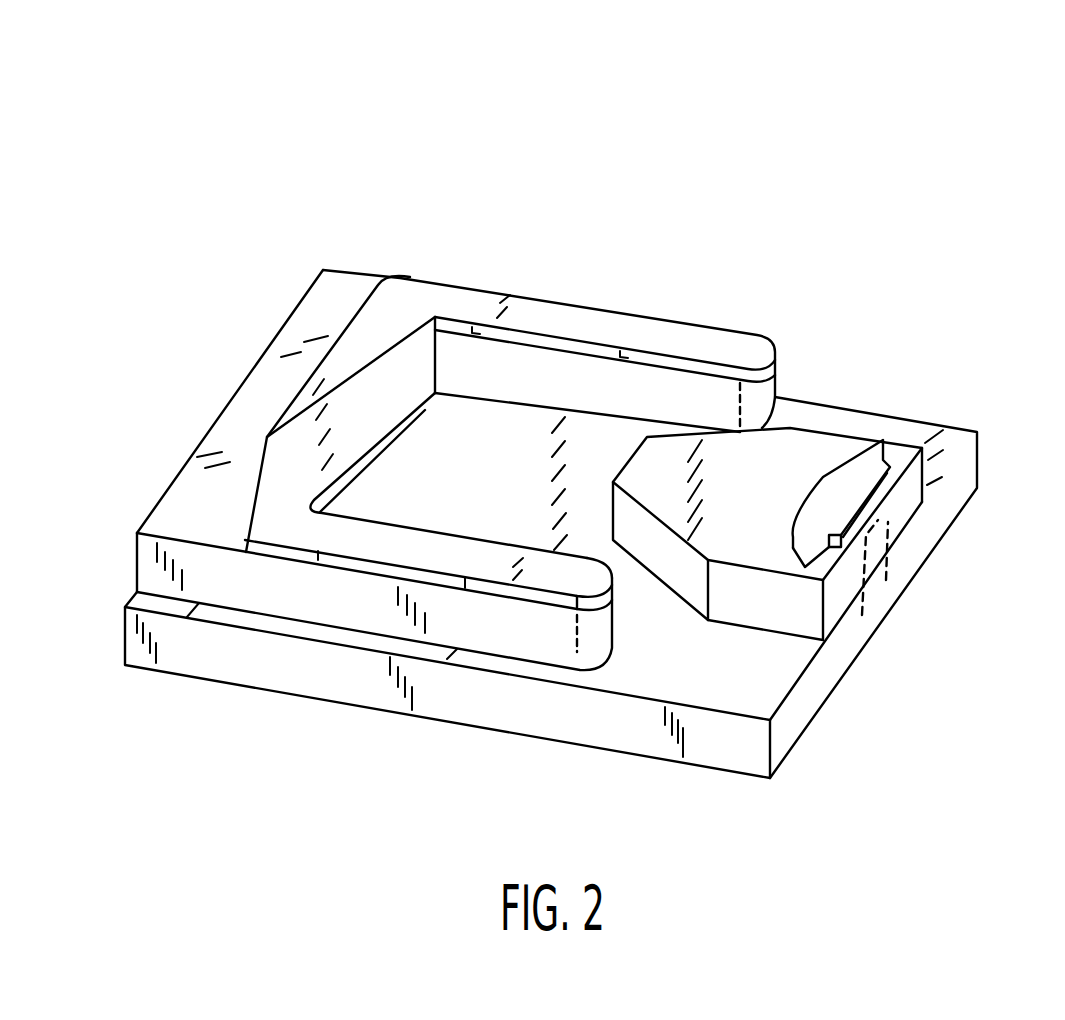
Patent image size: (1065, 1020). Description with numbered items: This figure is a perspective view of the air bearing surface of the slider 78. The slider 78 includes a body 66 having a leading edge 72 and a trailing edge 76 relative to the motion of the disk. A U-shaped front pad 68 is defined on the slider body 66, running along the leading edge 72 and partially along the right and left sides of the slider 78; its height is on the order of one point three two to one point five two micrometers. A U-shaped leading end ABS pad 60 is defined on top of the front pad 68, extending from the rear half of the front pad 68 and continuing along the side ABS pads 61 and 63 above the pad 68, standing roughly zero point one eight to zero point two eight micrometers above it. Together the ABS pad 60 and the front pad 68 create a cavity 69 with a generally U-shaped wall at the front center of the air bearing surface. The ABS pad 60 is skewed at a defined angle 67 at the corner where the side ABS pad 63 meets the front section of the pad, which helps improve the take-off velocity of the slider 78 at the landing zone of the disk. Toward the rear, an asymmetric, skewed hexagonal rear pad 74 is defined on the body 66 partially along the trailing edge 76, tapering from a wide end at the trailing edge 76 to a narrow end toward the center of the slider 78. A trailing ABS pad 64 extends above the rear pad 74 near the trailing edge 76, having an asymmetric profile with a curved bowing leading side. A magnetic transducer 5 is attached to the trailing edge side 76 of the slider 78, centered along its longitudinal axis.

The magnetic transducer 5 is at (873, 592).
The leading end ABS pad 60 is at (352, 363).
The side ABS pad 61 is at (615, 317).
The side ABS pad 63 is at (452, 548).
The trailing ABS pad 64 is at (824, 506).
The slider body 66 is at (905, 428).
The angle 67 is at (240, 484).
The front pad 68 is at (243, 413).
The cavity 69 is at (500, 464).
The leading edge 72 is at (150, 474).
The rear pad 74 is at (768, 463).
The trailing edge 76 is at (796, 727).
The slider 78 is at (536, 246).